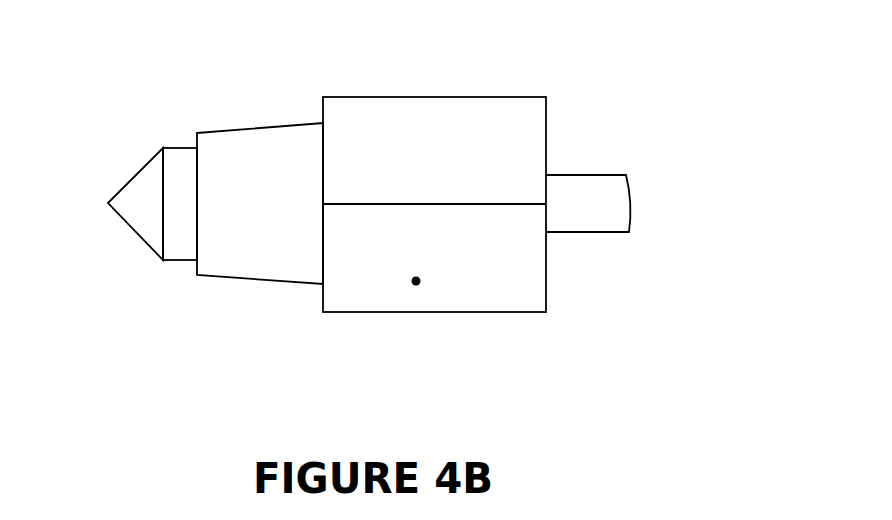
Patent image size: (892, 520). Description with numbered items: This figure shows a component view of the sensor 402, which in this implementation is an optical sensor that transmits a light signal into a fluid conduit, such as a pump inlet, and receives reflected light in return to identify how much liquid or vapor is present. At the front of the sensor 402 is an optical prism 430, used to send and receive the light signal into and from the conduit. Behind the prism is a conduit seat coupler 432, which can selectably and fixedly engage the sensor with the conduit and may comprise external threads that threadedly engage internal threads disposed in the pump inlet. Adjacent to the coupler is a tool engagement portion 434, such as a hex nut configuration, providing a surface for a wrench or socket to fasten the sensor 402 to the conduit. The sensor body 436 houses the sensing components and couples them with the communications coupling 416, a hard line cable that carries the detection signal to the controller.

The sensor 402 is at (593, 56).
The communications coupling 416 is at (605, 173).
The optical prism 430 is at (133, 227).
The conduit seat coupler 432 is at (268, 279).
The tool engagement portion 434 is at (383, 312).
The sensor body 436 is at (417, 283).